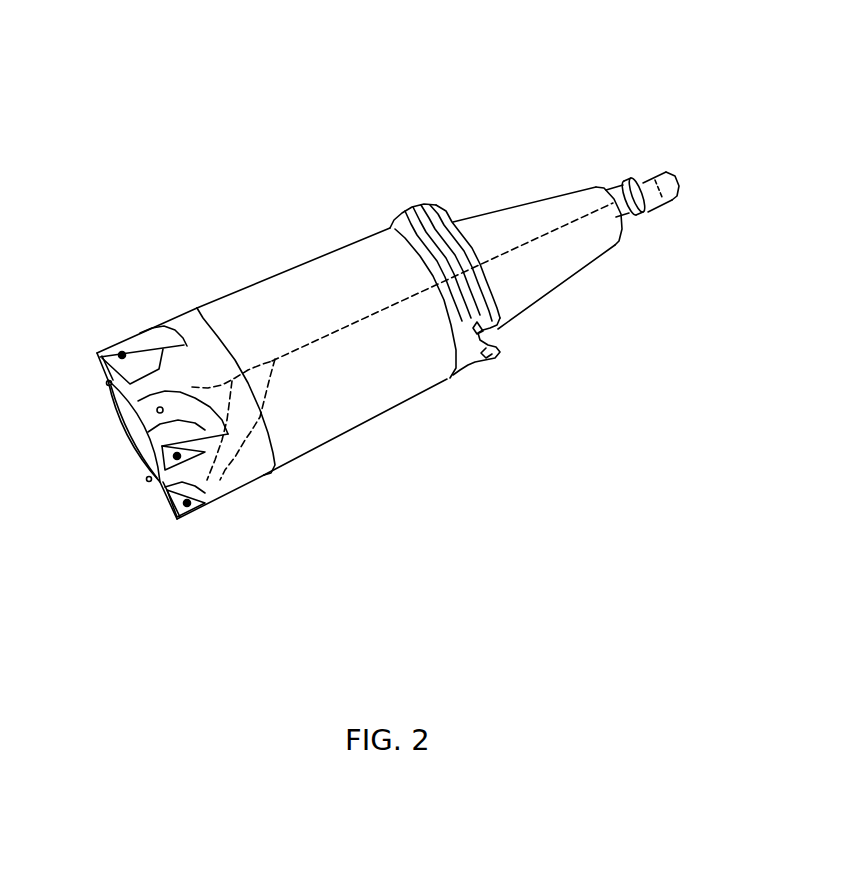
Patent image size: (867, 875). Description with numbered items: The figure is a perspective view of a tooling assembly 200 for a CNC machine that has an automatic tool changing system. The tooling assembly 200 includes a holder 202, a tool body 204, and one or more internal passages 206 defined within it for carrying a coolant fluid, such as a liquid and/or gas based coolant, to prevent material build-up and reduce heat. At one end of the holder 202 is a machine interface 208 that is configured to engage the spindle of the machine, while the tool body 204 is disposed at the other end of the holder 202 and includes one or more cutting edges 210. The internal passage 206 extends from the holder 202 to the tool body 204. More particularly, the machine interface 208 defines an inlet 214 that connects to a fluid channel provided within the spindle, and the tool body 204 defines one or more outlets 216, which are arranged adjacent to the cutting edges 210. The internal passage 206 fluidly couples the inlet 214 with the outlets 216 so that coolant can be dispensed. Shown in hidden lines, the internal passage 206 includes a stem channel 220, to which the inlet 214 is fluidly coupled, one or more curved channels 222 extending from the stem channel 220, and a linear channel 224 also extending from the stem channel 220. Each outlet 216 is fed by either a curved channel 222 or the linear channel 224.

The tooling assembly 200 is at (553, 92).
The holder 202 is at (713, 304).
The tool body 204 is at (287, 523).
The internal passage 206 is at (325, 308).
The machine interface 208 is at (533, 201).
The cutting edges 210 is at (155, 483).
The inlet 214 is at (670, 187).
The outlets 216 is at (120, 353).
The stem channel 220 is at (333, 337).
The curved channels 222 is at (192, 387).
The linear channel 224 is at (245, 440).